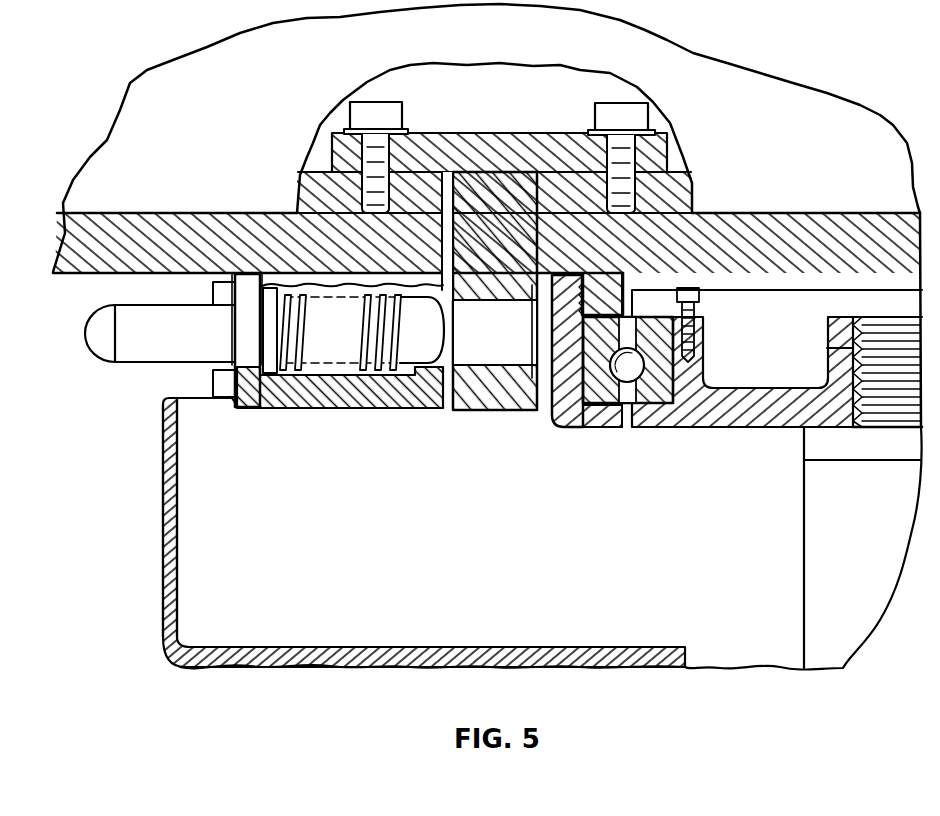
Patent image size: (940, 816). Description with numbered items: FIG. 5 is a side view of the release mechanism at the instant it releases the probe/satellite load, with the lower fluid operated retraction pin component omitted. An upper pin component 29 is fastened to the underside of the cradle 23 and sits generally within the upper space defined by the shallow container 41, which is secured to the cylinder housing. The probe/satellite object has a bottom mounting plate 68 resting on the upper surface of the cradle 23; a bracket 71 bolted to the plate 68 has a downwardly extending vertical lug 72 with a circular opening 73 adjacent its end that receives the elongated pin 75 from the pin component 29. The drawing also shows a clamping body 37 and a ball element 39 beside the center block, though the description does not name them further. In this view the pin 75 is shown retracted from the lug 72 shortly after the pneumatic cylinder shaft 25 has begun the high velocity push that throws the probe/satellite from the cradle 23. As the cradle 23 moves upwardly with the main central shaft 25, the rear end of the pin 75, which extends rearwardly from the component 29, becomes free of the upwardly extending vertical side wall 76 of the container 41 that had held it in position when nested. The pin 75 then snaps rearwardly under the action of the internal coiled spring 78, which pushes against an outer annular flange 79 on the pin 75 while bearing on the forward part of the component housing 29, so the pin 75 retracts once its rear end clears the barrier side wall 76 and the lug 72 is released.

The cradle 23 is at (833, 232).
The pneumatic cylinder shaft 25 is at (839, 566).
The upper pin component 29 is at (388, 390).
The clamp body 37 is at (733, 418).
The ball detent 39 is at (655, 395).
The shallow container 41 is at (471, 579).
The bottom mounting plate 68 is at (305, 192).
The bracket 71 is at (470, 148).
The vertical lug 72 is at (502, 400).
The circular opening 73 is at (471, 345).
The elongated pin 75 is at (150, 345).
The vertical side wall 76 is at (178, 578).
The internal coiled spring 78 is at (307, 387).
The outer annular flange 79 is at (277, 390).